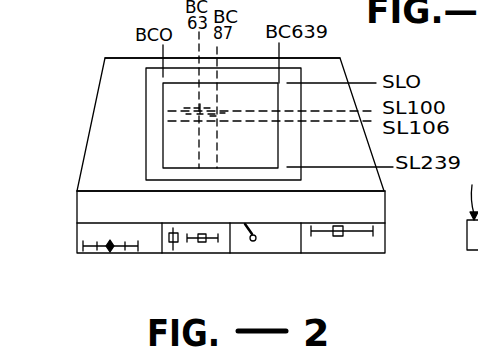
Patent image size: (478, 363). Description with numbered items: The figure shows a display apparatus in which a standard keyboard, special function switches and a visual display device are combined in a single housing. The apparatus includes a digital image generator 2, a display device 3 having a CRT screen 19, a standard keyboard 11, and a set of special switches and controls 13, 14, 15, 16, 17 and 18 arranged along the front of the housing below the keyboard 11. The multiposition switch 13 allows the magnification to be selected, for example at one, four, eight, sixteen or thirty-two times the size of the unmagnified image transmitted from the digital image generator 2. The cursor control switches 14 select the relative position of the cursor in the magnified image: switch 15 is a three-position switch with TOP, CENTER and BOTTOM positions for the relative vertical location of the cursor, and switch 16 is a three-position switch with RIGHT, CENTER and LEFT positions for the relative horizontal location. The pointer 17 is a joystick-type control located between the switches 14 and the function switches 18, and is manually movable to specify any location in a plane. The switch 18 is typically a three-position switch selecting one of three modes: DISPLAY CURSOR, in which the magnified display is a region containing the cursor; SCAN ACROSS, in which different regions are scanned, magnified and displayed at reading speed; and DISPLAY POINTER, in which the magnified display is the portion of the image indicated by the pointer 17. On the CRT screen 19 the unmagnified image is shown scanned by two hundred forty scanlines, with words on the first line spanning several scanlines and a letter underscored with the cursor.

The digital image generator 2 is at (344, 70).
The display device 3 is at (140, 141).
The standard keyboard 11 is at (376, 205).
The multiposition switch 13 is at (82, 239).
The cursor control switches 14 is at (166, 245).
The three-position switch 15 is at (171, 229).
The three-position switch 16 is at (199, 237).
The pointer 17 is at (291, 242).
The function switch 18 is at (383, 241).
The CRT screen 19 is at (257, 160).